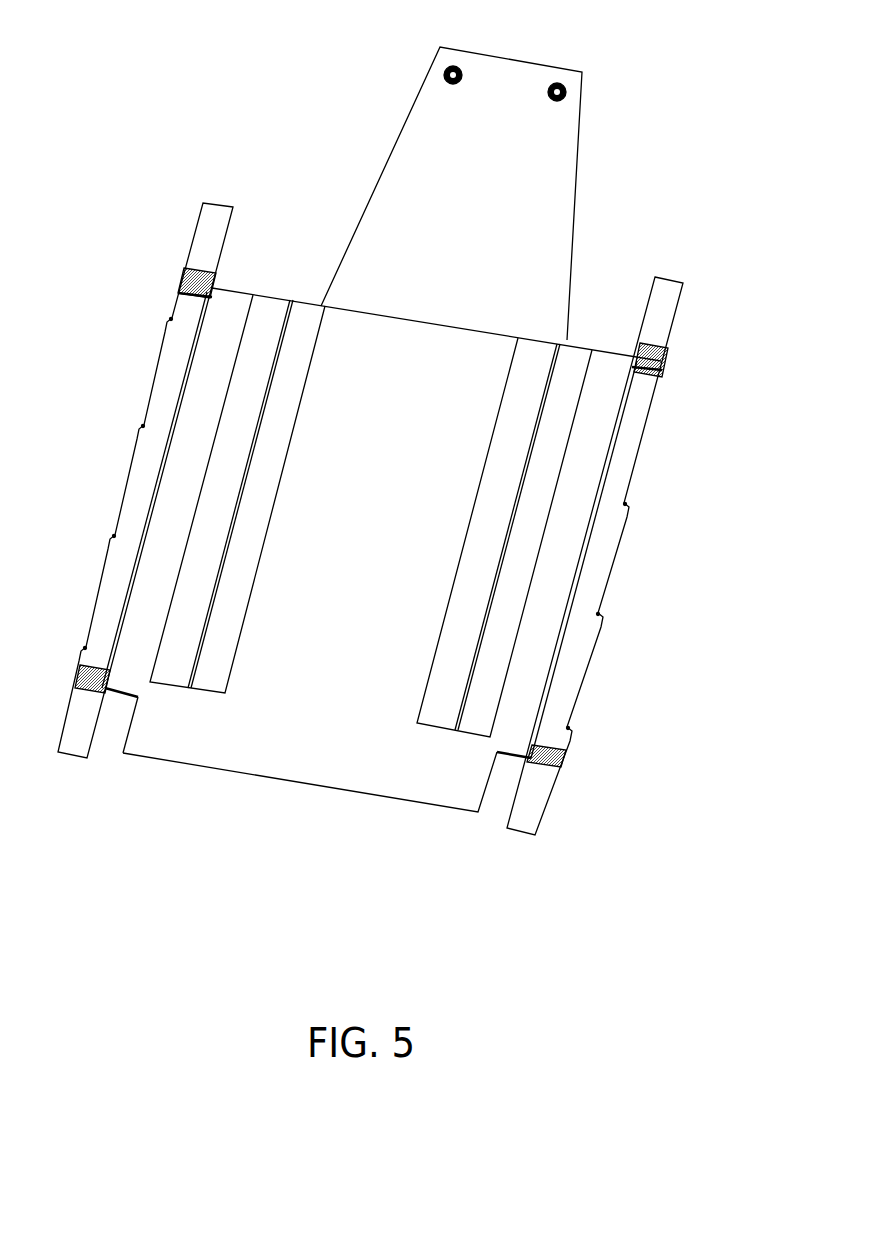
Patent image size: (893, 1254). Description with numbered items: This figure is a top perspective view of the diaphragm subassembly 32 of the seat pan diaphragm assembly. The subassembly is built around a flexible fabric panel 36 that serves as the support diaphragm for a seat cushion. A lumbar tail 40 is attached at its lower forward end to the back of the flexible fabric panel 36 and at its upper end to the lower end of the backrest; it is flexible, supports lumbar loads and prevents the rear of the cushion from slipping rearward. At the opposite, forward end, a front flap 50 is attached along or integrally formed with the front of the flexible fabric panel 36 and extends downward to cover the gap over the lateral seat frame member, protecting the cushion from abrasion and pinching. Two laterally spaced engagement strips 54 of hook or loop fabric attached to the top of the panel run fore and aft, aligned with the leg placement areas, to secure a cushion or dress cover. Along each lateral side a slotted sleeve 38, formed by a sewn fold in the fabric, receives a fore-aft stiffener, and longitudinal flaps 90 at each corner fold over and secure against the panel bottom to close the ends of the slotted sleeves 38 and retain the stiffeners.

The diaphragm subassembly 32 is at (279, 170).
The flexible fabric panel 36 is at (273, 632).
The slotted sleeve 38 is at (148, 488).
The lumbar tail 40 is at (567, 152).
The front flap 50 is at (322, 764).
The engagement strips 54 is at (305, 315).
The longitudinal flaps 90 is at (217, 235).